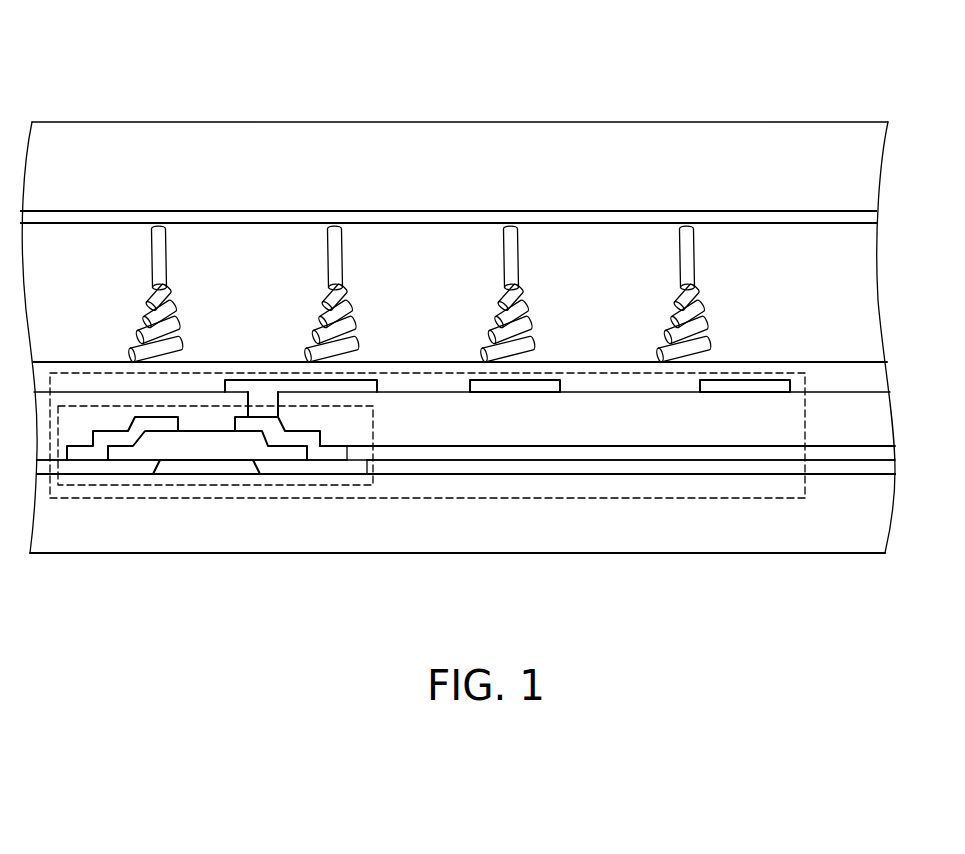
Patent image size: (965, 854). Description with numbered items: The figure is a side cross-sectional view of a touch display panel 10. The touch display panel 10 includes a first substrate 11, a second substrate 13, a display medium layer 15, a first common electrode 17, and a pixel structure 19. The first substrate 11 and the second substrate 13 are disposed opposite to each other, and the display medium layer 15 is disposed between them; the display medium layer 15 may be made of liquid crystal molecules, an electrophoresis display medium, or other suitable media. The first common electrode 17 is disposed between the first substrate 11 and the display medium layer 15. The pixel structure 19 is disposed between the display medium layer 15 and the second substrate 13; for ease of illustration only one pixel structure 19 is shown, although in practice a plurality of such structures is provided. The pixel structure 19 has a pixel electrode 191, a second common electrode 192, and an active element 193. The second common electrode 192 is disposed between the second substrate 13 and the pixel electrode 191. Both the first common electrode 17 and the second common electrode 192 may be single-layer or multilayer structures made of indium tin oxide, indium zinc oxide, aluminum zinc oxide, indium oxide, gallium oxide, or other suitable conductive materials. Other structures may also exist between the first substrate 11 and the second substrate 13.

The touch display panel 10 is at (49, 60).
The first substrate 11 is at (865, 167).
The second substrate 13 is at (868, 514).
The display medium layer 15 is at (865, 287).
The first common electrode 17 is at (865, 218).
The pixel structure 19 is at (805, 423).
The pixel electrode 191 is at (515, 385).
The second common electrode 192 is at (597, 466).
The active element 193 is at (200, 485).